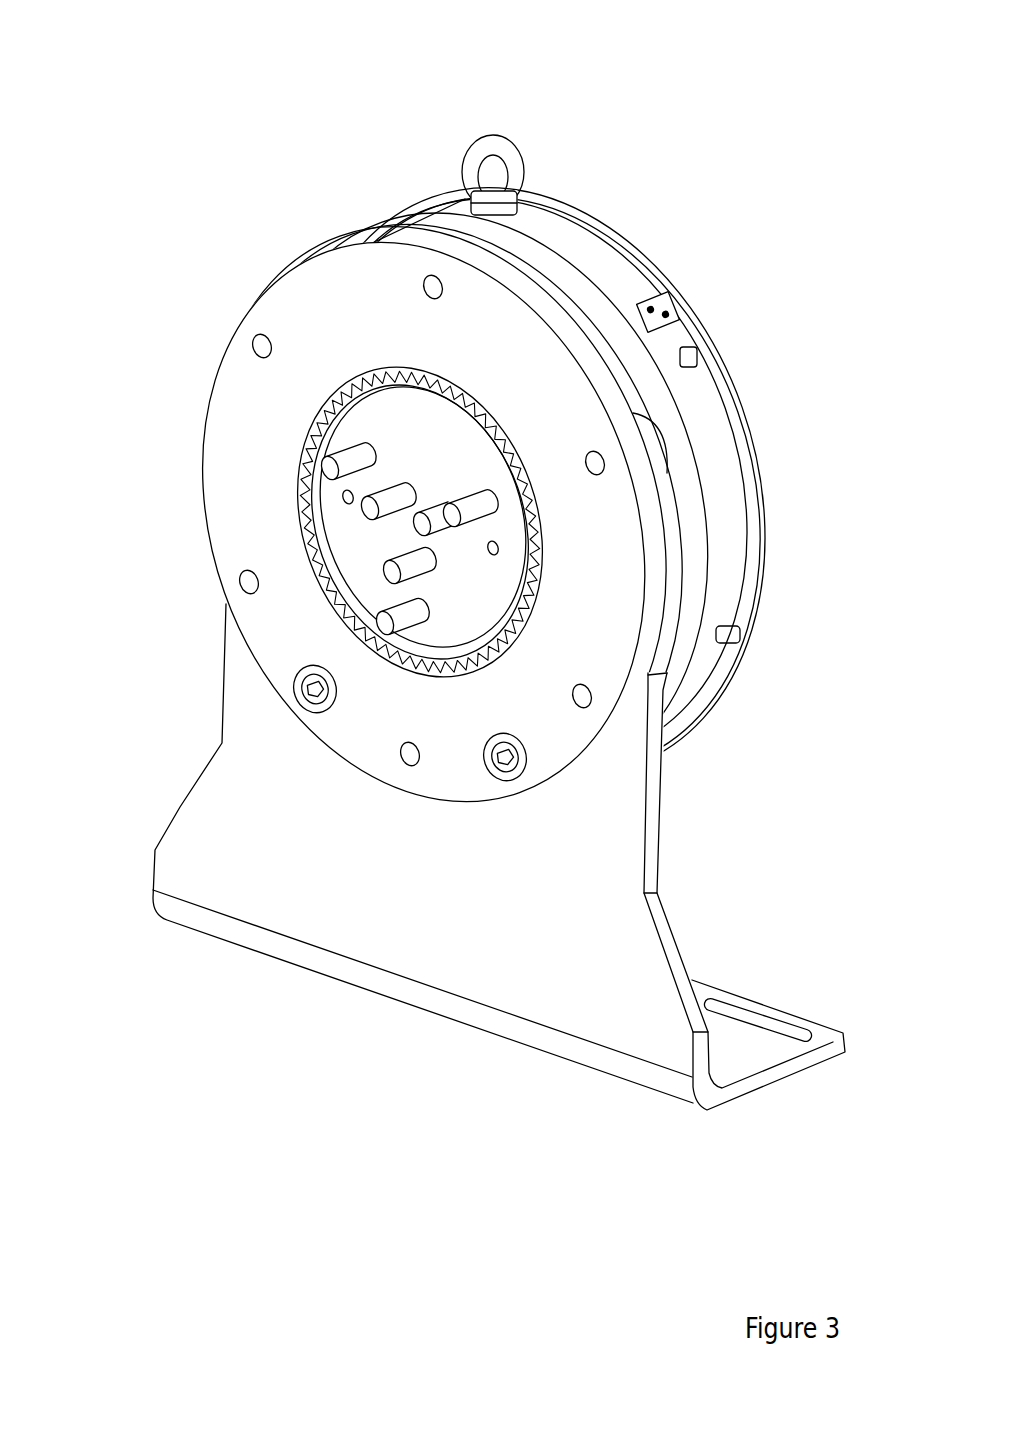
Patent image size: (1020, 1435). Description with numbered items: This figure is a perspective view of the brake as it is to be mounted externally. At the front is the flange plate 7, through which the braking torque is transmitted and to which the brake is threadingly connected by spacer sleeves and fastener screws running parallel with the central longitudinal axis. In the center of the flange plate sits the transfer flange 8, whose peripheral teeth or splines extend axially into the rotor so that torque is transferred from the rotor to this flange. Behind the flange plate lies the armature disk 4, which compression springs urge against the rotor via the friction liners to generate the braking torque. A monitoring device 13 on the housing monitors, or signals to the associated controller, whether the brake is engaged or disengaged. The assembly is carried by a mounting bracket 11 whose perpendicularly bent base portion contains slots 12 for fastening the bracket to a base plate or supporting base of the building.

The armature disk 4 is at (530, 478).
The flange plate 7 is at (447, 435).
The transfer flange 8 is at (319, 519).
The mounting bracket 11 is at (445, 857).
The slots 12 is at (791, 905).
The monitoring device 13 is at (763, 451).